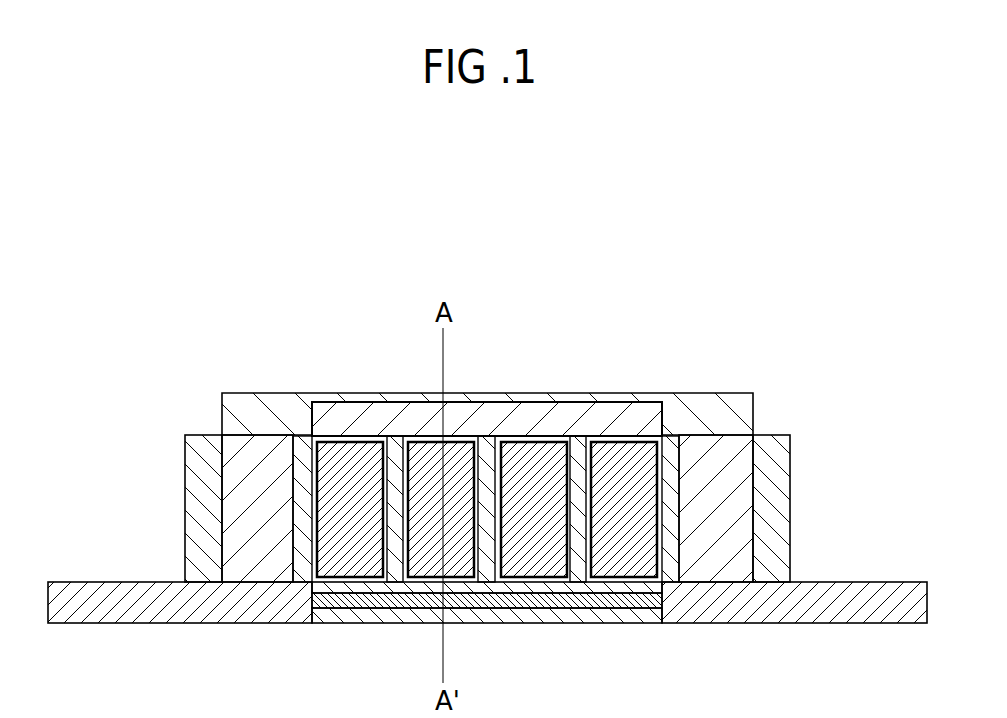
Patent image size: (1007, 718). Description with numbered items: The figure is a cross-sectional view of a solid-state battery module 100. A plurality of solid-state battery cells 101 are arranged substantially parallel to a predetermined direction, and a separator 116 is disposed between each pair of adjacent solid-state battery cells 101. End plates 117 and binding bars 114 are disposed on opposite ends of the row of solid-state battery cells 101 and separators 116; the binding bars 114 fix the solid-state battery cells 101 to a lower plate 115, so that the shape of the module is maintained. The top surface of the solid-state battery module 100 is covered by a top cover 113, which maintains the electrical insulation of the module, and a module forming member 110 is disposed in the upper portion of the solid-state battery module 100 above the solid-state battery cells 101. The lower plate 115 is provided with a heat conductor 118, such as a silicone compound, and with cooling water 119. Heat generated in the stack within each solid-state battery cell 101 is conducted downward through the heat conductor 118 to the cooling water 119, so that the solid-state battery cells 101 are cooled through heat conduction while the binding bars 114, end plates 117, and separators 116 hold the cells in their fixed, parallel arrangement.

The solid-state battery module 100 is at (812, 344).
The solid-state battery cells 101 is at (347, 458).
The module forming member 110 is at (580, 412).
The top cover 113 is at (285, 410).
The binding bars 114 is at (205, 483).
The lower plate 115 is at (122, 585).
The separators 116 is at (306, 580).
The end plates 117 is at (250, 455).
The heat conductor 118 is at (628, 600).
The cooling water 119 is at (540, 614).